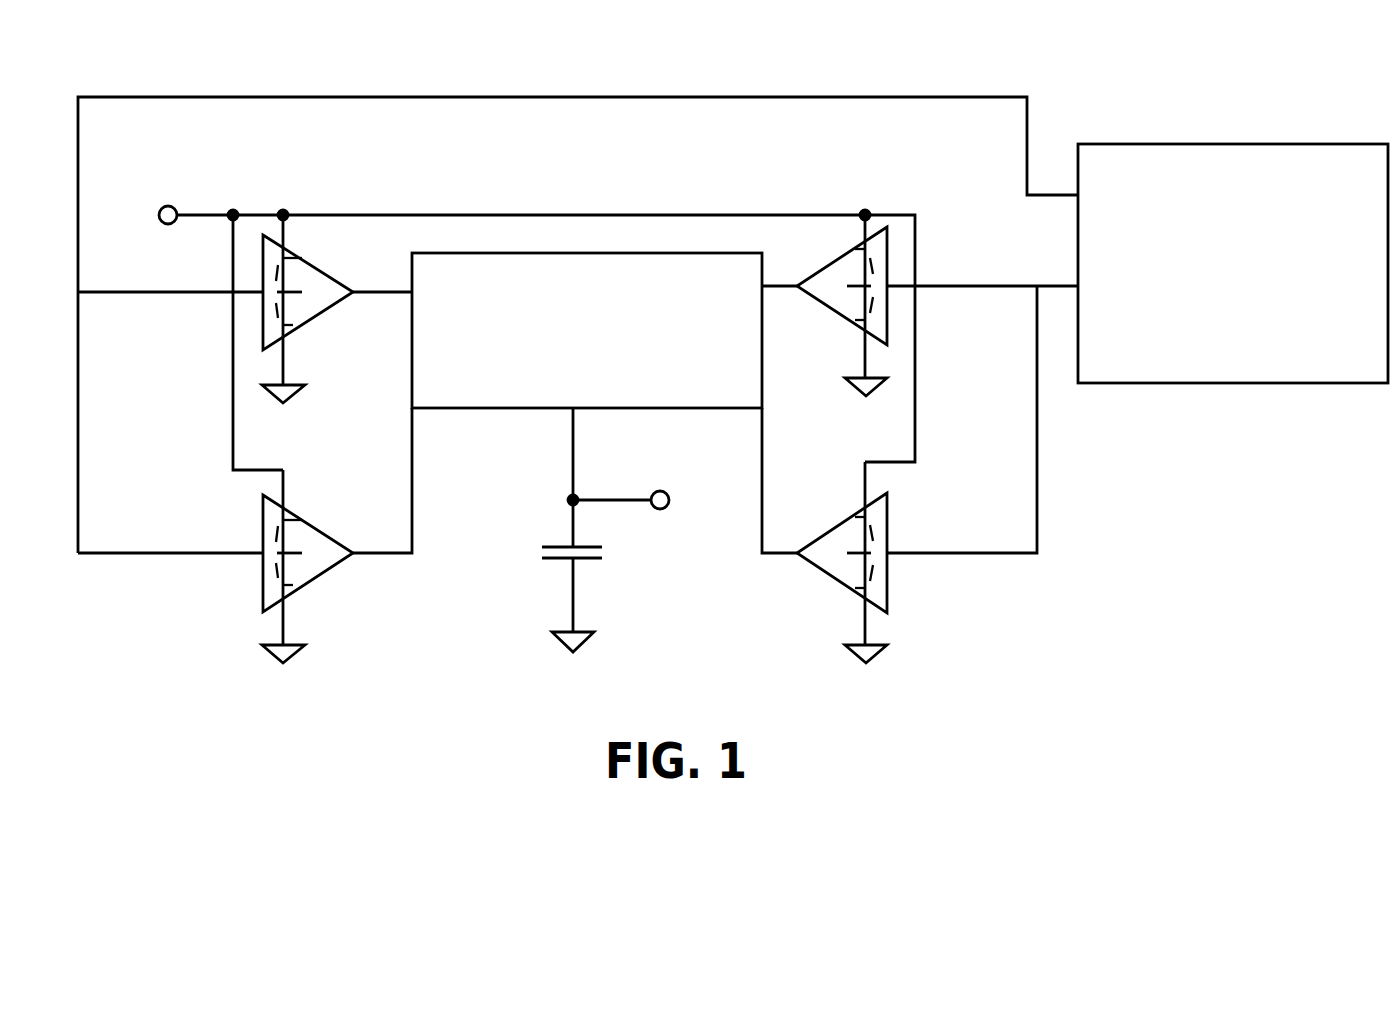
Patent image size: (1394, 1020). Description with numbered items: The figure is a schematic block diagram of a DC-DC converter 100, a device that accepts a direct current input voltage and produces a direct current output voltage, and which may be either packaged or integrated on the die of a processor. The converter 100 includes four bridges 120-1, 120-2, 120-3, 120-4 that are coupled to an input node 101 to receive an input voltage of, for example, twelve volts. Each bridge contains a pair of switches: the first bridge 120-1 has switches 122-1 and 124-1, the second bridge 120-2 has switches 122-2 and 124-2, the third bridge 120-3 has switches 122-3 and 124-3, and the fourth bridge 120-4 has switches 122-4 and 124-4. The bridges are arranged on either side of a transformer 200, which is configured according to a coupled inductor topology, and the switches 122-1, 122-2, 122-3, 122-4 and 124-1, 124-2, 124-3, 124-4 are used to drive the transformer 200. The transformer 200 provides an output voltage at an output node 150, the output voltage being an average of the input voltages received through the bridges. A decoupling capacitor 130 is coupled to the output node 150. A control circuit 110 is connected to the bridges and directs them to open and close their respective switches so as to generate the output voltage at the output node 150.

The DC-DC converter 100 is at (1100, 701).
The input node 101 is at (173, 205).
The control circuit 110 is at (1218, 307).
The bridge 120-1 is at (263, 263).
The bridge 120-2 is at (263, 519).
The bridge 120-3 is at (887, 253).
The bridge 120-4 is at (887, 511).
The switch 122-1 is at (302, 258).
The switch 122-2 is at (302, 520).
The switch 122-3 is at (865, 249).
The switch 122-4 is at (865, 517).
The switch 124-1 is at (293, 325).
The switch 124-2 is at (293, 585).
The switch 124-3 is at (865, 320).
The switch 124-4 is at (865, 588).
The decoupling capacitor 130 is at (608, 548).
The output node 150 is at (667, 490).
The transformer 200 is at (573, 359).